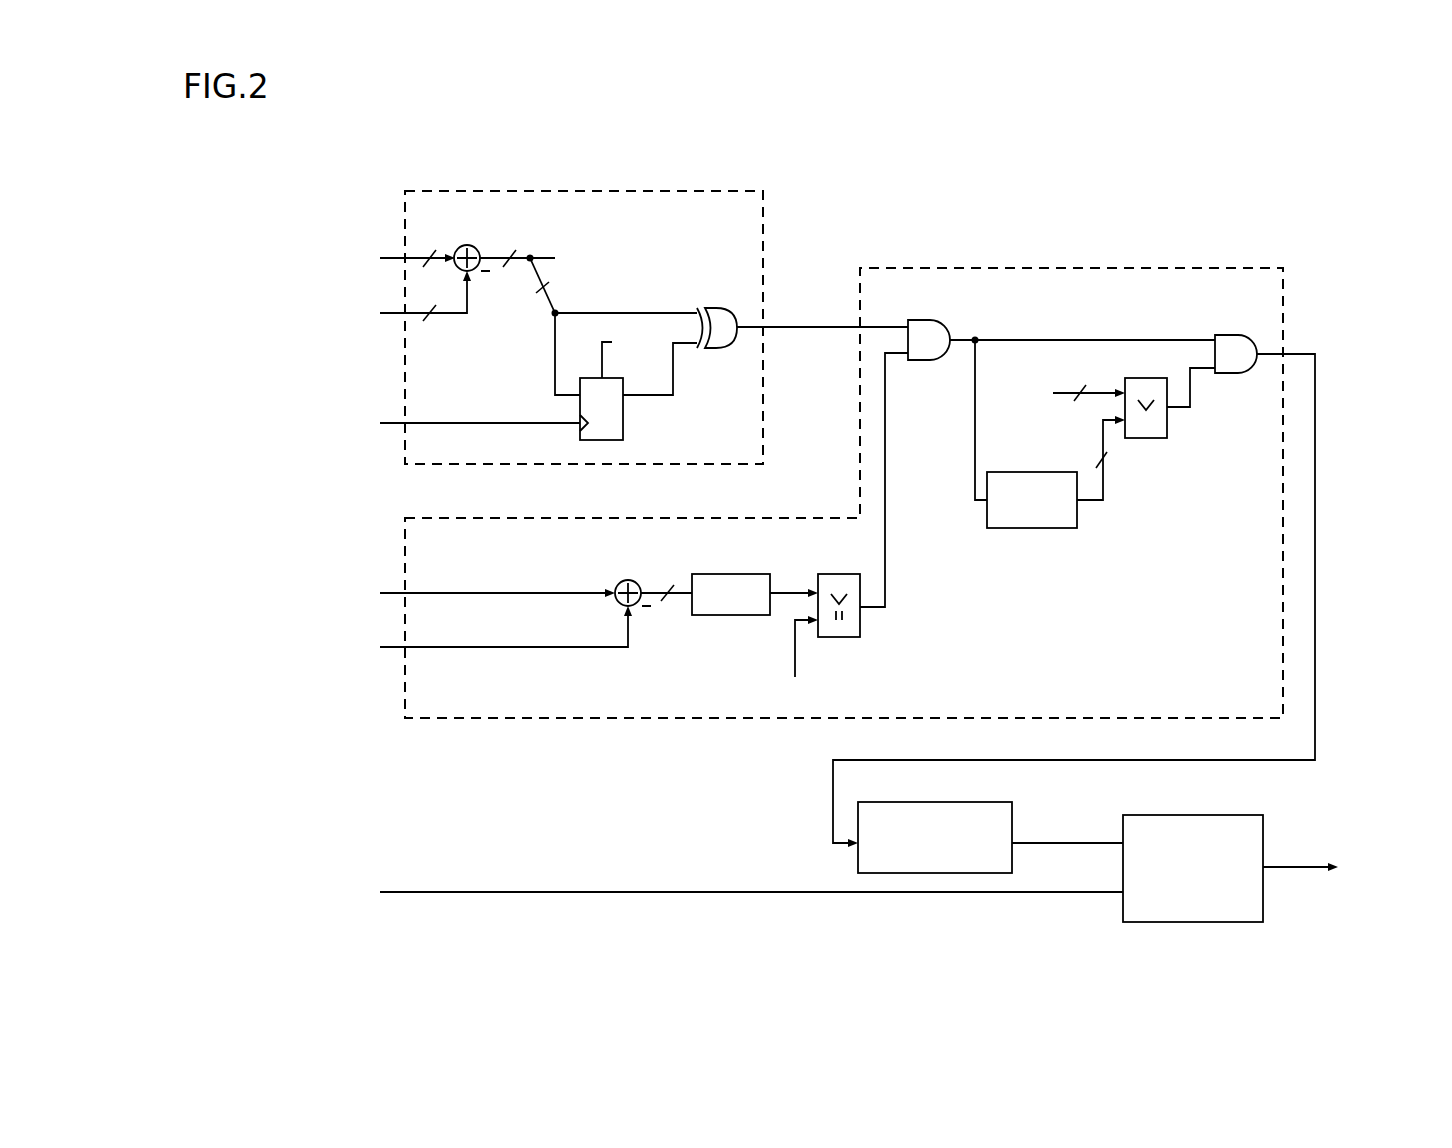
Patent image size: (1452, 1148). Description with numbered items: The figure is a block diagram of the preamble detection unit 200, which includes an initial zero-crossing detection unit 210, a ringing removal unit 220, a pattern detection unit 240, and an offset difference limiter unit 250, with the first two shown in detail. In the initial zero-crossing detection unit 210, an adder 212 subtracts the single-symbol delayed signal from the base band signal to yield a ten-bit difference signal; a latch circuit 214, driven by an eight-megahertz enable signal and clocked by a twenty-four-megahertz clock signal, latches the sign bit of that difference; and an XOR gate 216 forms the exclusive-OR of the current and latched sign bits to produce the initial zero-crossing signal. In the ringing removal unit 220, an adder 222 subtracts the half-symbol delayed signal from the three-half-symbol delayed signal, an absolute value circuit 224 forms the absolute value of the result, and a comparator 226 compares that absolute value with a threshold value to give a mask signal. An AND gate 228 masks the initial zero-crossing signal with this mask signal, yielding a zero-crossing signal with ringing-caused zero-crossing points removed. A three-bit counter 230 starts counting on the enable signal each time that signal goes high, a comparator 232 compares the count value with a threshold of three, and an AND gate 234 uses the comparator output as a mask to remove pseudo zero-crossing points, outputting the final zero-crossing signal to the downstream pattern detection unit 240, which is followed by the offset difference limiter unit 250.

The preamble detection unit 200 is at (833, 941).
The initial zero-crossing detection unit 210 is at (676, 191).
The adder 212 is at (469, 246).
The latch circuit 214 is at (623, 425).
The XOR gate 216 is at (717, 308).
The ringing removal unit 220 is at (1070, 268).
The adder 222 is at (631, 578).
The absolute value circuit 224 is at (733, 574).
The comparator 226 is at (838, 574).
The AND gate 228 is at (930, 360).
The 3-bit counter 230 is at (1040, 528).
The comparator 232 is at (1146, 438).
The AND gate 234 is at (1237, 373).
The pattern detection unit 240 is at (937, 802).
The offset difference limiter unit 250 is at (1194, 815).